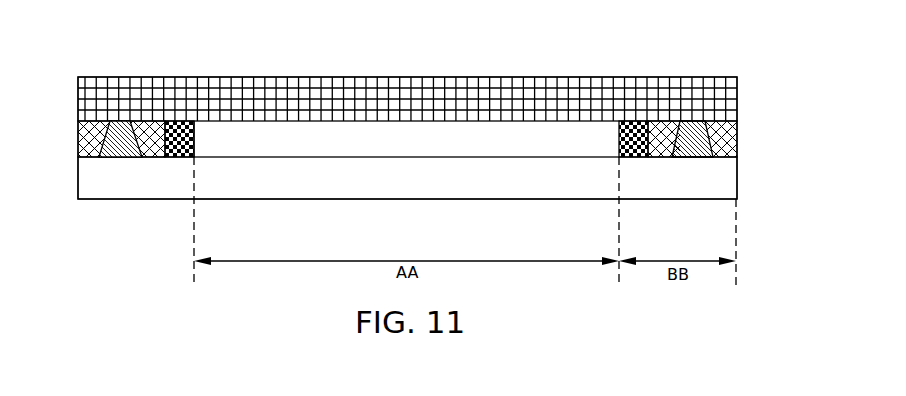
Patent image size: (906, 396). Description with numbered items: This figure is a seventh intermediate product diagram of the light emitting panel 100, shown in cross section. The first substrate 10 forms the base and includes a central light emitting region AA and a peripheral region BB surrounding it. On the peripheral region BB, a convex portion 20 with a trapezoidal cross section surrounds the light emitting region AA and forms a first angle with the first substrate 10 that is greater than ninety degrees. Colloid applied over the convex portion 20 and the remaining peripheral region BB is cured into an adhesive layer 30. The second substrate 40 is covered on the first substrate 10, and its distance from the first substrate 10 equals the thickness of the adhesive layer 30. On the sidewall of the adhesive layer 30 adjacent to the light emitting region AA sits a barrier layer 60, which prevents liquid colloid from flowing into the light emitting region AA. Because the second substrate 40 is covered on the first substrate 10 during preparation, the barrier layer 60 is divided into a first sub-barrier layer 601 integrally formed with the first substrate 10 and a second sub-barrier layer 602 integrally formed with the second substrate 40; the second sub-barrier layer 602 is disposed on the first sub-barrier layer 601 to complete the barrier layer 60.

The light emitting panel 100 is at (411, 104).
The first substrate 10 is at (705, 187).
The convex portion 20 is at (705, 143).
The adhesive layer 30 is at (87, 140).
The second substrate 40 is at (705, 112).
The barrier layer 60 is at (406, 87).
The first sub-barrier layer 601 is at (184, 122).
The second sub-barrier layer 602 is at (195, 147).